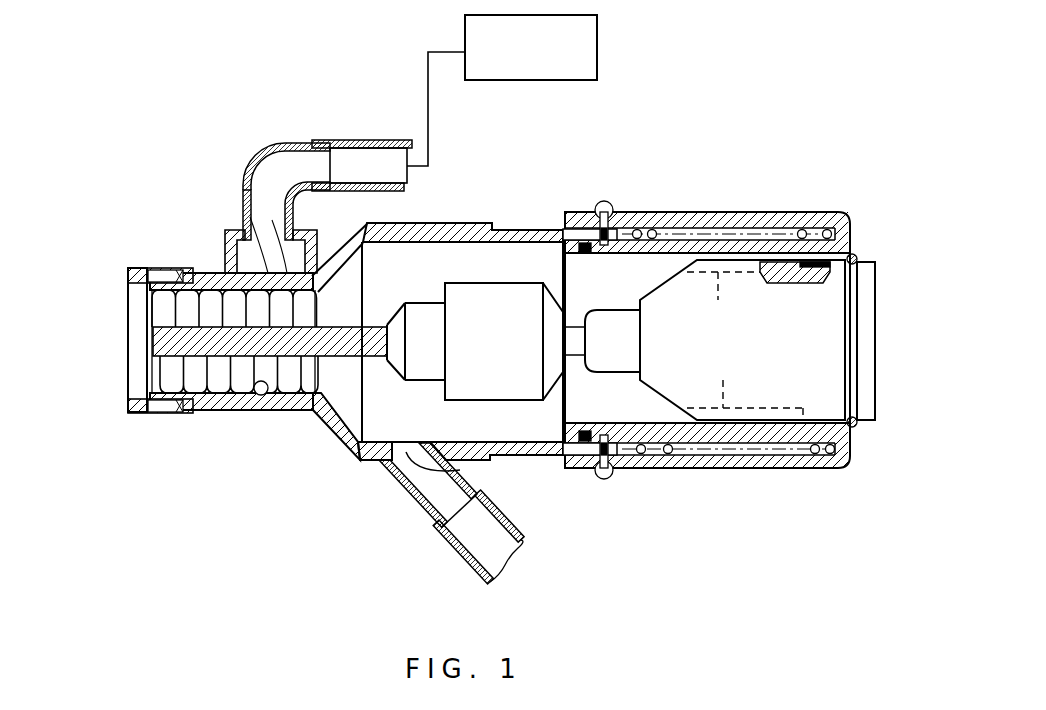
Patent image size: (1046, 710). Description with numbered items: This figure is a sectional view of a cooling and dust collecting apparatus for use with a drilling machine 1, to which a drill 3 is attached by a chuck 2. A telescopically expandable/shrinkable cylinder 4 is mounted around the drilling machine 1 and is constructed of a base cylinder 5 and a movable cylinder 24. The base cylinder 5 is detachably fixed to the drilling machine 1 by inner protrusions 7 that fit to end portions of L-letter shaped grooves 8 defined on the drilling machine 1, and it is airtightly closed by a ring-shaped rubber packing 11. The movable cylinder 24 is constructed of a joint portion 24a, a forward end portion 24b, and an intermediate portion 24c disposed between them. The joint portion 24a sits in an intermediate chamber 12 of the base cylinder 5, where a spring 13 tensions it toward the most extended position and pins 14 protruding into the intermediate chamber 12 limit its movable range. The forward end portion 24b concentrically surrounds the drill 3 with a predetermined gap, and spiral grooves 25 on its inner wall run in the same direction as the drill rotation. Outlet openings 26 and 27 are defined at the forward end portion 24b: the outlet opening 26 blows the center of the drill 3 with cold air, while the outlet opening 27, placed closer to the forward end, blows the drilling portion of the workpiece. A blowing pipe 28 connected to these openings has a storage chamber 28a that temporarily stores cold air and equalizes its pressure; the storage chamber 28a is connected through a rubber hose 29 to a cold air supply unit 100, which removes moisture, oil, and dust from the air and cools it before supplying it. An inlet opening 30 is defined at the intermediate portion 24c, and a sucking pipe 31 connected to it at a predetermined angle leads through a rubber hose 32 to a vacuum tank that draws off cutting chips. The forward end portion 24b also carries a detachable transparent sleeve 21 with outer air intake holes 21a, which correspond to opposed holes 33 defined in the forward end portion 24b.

The drilling machine 1 is at (823, 319).
The chuck 2 is at (482, 298).
The drill 3 is at (358, 355).
The telescopically expandable/shrinkable cylinder 4 is at (463, 222).
The base cylinder 5 is at (704, 212).
The inner protrusions 7 is at (790, 283).
The L-letter shaped grooves 8 is at (745, 346).
The ring-shaped rubber packing 11 is at (852, 432).
The intermediate chamber 12 is at (810, 226).
The spring 13 is at (638, 226).
The pins 14 is at (603, 203).
The transparent sleeve 21 is at (127, 272).
The outer air intake holes 21a is at (160, 268).
The movable cylinder 24 is at (428, 222).
The joint portion 24a is at (585, 228).
The forward end portion 24b is at (216, 413).
The intermediate portion 24c is at (358, 461).
The spiral grooves 25 is at (262, 396).
The outlet opening 26 is at (252, 237).
The outlet opening 27 is at (232, 233).
The blowing pipe 28 is at (284, 142).
The storage chamber 28a is at (299, 240).
The rubber hose 29 is at (358, 142).
The inlet opening 30 is at (461, 468).
The sucking pipe 31 is at (405, 483).
The rubber hose 32 is at (465, 559).
The opposed holes 33 is at (155, 282).
The cold air supply unit 100 is at (597, 48).